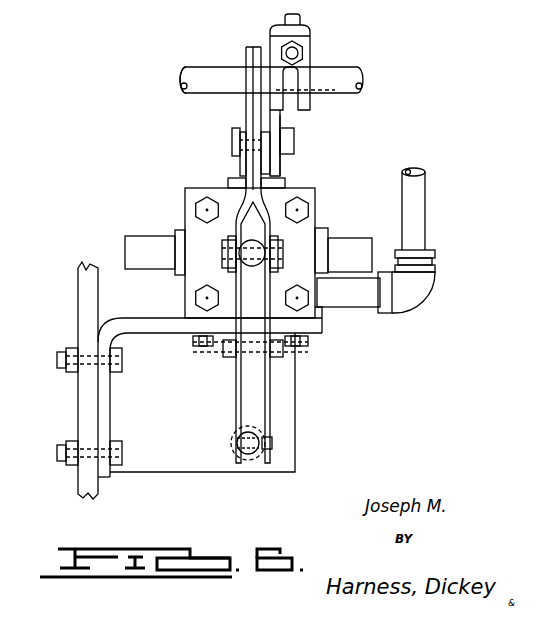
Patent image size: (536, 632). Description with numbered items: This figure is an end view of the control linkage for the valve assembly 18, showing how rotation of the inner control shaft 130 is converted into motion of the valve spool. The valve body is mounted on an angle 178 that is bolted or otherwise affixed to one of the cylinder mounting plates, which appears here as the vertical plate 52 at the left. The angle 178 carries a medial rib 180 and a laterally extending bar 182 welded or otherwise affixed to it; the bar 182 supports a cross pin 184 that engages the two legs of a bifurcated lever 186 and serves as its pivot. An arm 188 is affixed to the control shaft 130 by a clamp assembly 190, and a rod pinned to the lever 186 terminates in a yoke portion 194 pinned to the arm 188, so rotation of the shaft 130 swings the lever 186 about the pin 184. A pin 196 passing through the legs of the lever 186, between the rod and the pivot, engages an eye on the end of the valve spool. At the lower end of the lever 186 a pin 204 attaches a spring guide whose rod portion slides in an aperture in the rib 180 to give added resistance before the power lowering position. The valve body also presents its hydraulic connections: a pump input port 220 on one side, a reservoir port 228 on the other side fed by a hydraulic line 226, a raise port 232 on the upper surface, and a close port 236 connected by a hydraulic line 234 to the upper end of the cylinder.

The valve assembly 18 is at (98, 178).
The wall 52 is at (80, 300).
The inner control shaft 130 is at (341, 67).
The angle 178 is at (133, 316).
The medial rib 180 is at (190, 413).
The laterally extending bar 182 is at (256, 360).
The cross pin 184 is at (281, 353).
The bifurcated lever 186 is at (267, 208).
The arm 188 is at (302, 117).
The clamp assembly 190 is at (312, 33).
The yoke portion 194 is at (282, 164).
The pin 196 is at (222, 253).
The pin 204 is at (275, 441).
The pump input port 220 is at (180, 233).
The hydraulic line 226 is at (353, 249).
The reservoir port 228 is at (330, 233).
The raise port 232 is at (232, 181).
The hydraulic line 234 is at (418, 212).
The close port 236 is at (332, 313).